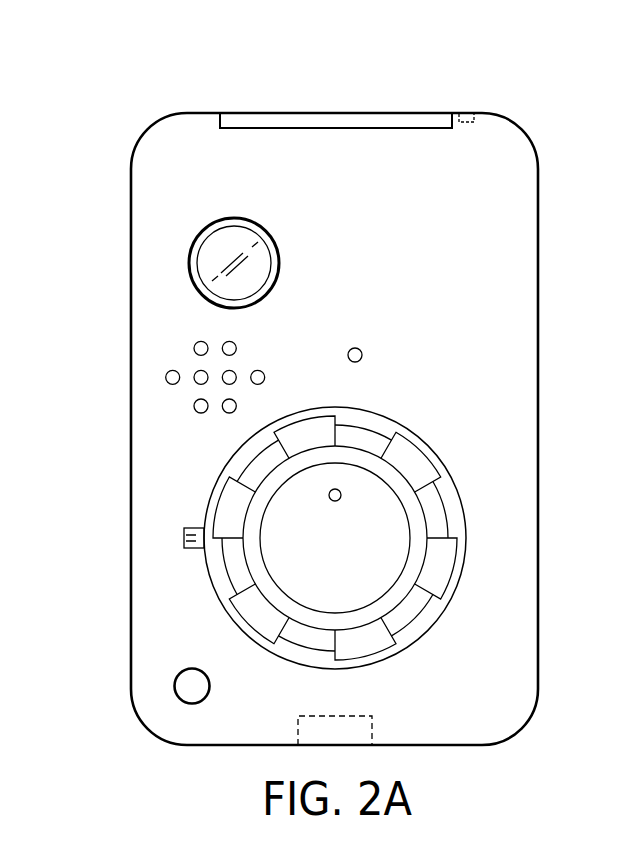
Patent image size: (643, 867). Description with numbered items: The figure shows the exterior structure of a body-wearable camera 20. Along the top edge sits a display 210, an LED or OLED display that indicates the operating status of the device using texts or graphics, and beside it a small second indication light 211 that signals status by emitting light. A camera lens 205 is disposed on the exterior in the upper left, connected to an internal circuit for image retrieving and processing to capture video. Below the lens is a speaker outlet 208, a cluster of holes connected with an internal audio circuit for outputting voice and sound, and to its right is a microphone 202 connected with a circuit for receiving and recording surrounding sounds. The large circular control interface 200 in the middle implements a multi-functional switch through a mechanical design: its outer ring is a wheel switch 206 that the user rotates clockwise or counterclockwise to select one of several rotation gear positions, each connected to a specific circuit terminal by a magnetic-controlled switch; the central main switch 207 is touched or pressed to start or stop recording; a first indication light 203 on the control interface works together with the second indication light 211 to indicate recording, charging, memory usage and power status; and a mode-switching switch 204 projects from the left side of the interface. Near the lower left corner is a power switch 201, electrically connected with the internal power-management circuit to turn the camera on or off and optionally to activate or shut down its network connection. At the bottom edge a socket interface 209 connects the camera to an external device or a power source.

The body-wearable camera 20 is at (556, 91).
The control interface 200 is at (335, 538).
The power switch 201 is at (175, 685).
The microphone 202 is at (362, 355).
The first indication light 203 is at (342, 496).
The mode-switching switch 204 is at (184, 530).
The camera lens 205 is at (188, 262).
The wheel switch 206 is at (448, 552).
The main switch 207 is at (392, 552).
The speaker outlet 208 is at (166, 378).
The socket interface 209 is at (372, 729).
The display 210 is at (333, 121).
The second indication light 211 is at (468, 112).